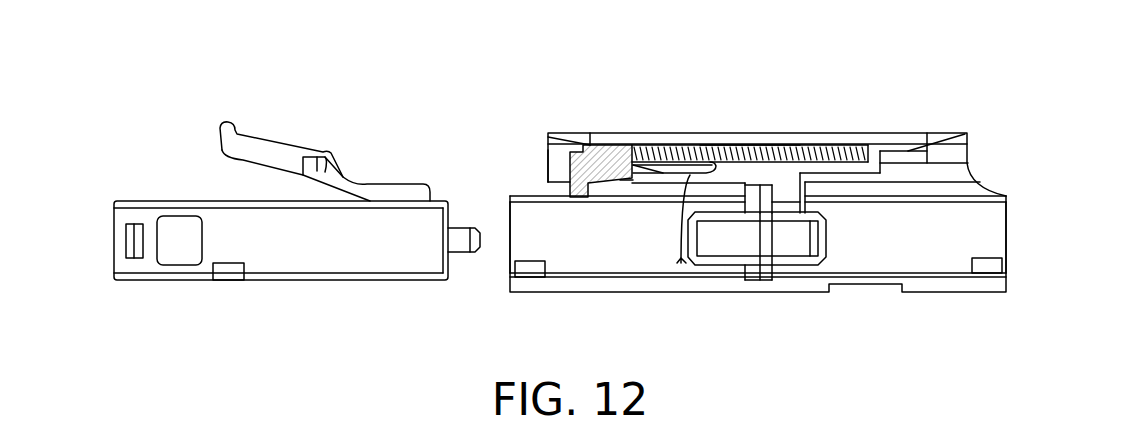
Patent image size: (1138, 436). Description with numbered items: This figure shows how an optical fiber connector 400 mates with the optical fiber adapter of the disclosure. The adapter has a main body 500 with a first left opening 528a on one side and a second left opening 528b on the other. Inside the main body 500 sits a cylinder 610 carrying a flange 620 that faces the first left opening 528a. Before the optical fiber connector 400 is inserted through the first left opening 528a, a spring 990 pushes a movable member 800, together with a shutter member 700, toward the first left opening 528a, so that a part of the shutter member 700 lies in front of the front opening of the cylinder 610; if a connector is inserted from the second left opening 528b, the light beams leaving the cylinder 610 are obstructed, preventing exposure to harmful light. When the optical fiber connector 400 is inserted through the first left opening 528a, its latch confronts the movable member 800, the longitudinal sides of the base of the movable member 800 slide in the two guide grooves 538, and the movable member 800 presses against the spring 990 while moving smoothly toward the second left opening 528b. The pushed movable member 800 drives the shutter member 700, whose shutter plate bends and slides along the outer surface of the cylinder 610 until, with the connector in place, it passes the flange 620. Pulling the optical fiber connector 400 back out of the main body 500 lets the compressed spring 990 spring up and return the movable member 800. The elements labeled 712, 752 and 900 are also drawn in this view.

The optical fiber connector 400 is at (325, 104).
The main body 500 is at (946, 288).
The first left opening 528a is at (552, 240).
The second left opening 528b is at (982, 232).
The guide grooves 538 is at (550, 178).
The cylinder 610 is at (725, 217).
The flange 620 is at (760, 282).
The shutter member 700 is at (688, 150).
The contact arm 712 is at (687, 268).
The retaining portion 752 is at (633, 180).
The movable member 800 is at (600, 152).
The cover 900 is at (874, 133).
The spring 990 is at (760, 148).